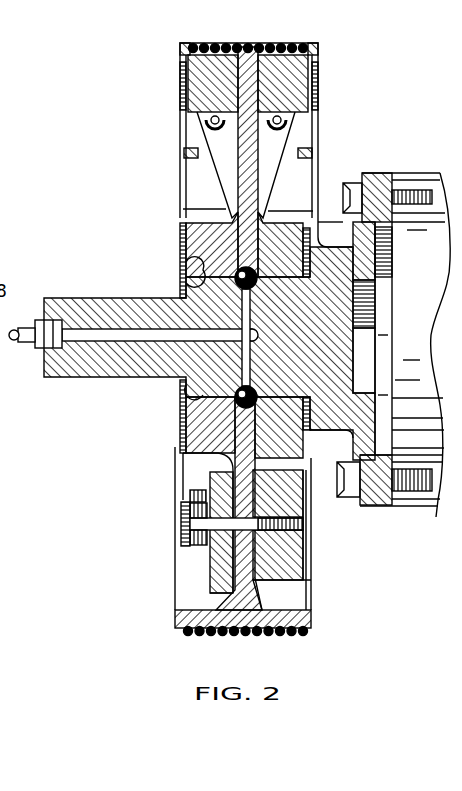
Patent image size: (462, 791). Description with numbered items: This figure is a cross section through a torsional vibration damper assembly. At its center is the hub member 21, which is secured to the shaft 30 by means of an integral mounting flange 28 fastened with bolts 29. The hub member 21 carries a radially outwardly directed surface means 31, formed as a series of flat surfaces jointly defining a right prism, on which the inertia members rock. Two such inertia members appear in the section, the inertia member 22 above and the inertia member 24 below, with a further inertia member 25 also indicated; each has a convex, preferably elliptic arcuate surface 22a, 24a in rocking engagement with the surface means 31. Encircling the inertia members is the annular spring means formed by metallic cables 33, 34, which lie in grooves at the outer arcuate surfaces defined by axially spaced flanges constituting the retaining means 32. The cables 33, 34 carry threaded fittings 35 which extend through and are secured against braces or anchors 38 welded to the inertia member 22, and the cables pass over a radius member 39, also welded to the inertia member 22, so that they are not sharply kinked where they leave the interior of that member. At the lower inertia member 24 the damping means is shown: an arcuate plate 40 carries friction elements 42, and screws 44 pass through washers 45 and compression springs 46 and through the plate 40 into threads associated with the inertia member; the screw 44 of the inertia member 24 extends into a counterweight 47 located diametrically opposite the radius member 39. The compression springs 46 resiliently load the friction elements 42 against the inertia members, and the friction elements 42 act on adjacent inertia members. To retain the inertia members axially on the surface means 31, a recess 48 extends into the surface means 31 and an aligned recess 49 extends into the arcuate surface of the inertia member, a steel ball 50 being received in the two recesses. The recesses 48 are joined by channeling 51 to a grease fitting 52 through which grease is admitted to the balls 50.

The hub member 21 is at (318, 340).
The inertia member 22 is at (313, 128).
The arcuate surface 22a is at (180, 288).
The inertia member 24 is at (297, 600).
The arcuate surface 24a is at (174, 412).
The inertia member 25 is at (315, 222).
The mounting flange 28 is at (375, 415).
The bolts 29 is at (353, 500).
The shaft 30 is at (430, 500).
The radially directed surface means 31 is at (184, 263).
The axially retaining means 32 is at (178, 46).
The metallic cable 33 is at (212, 46).
The metallic cable 34 is at (300, 46).
The threaded fittings 35 is at (215, 129).
The braces or anchors 38 is at (214, 188).
The radius member 39 is at (188, 90).
The arcuate plate 40 is at (215, 485).
The friction elements 42 is at (213, 587).
The screws 44 is at (178, 512).
The washers 45 is at (188, 495).
The compression springs 46 is at (193, 553).
The counterweight 47 is at (297, 508).
The recess 48 is at (250, 388).
The recess 49 is at (243, 405).
The ball 50 is at (215, 372).
The channeling 51 is at (97, 342).
The grease fitting 52 is at (30, 340).